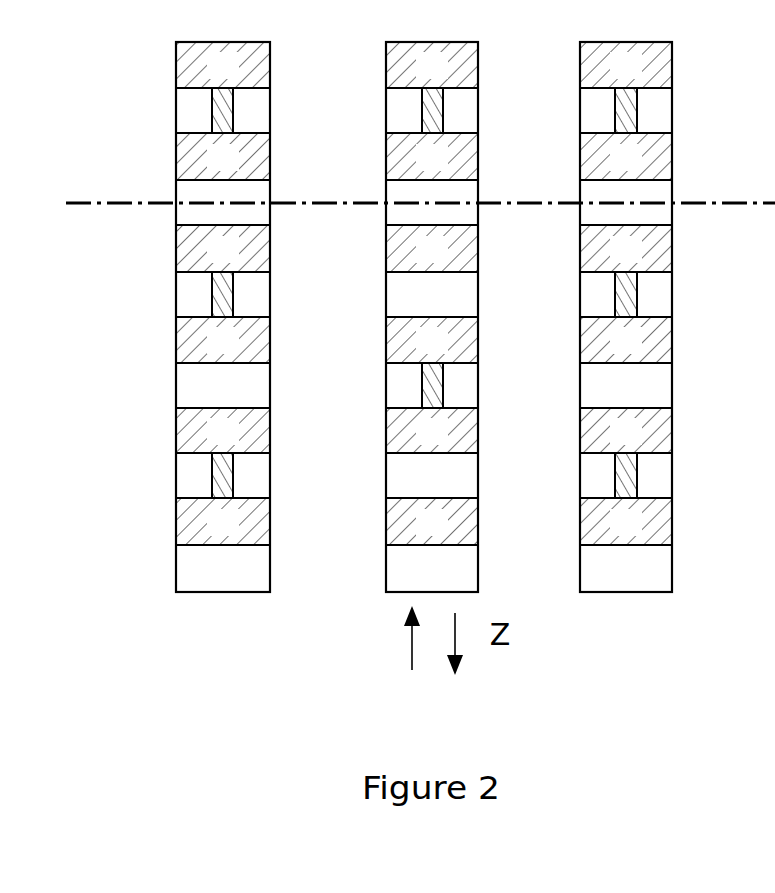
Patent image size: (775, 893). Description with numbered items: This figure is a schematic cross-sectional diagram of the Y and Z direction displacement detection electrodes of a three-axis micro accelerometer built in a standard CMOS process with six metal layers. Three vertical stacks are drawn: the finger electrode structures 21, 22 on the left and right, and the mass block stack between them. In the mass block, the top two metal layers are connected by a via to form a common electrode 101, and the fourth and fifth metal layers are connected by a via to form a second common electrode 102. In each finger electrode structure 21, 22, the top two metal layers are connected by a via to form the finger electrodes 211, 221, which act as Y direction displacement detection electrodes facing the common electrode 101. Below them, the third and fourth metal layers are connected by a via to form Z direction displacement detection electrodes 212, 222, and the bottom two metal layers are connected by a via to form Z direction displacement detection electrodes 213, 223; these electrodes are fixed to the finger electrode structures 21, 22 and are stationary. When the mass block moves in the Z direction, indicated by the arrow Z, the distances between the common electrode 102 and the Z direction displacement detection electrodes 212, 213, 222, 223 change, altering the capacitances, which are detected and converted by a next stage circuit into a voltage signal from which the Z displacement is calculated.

The finger electrode structure 22 is at (184, 299).
The common electrode 101 is at (464, 299).
The finger electrode structure 21 is at (655, 299).
The finger electrode 221 is at (184, 111).
The Z direction displacement detection electrode 222 is at (184, 294).
The Z direction displacement detection electrode 223 is at (184, 476).
The finger electrode 211 is at (655, 111).
The Z direction displacement detection electrode 212 is at (655, 294).
The Z direction displacement detection electrode 213 is at (655, 476).
The common electrode 102 is at (482, 385).